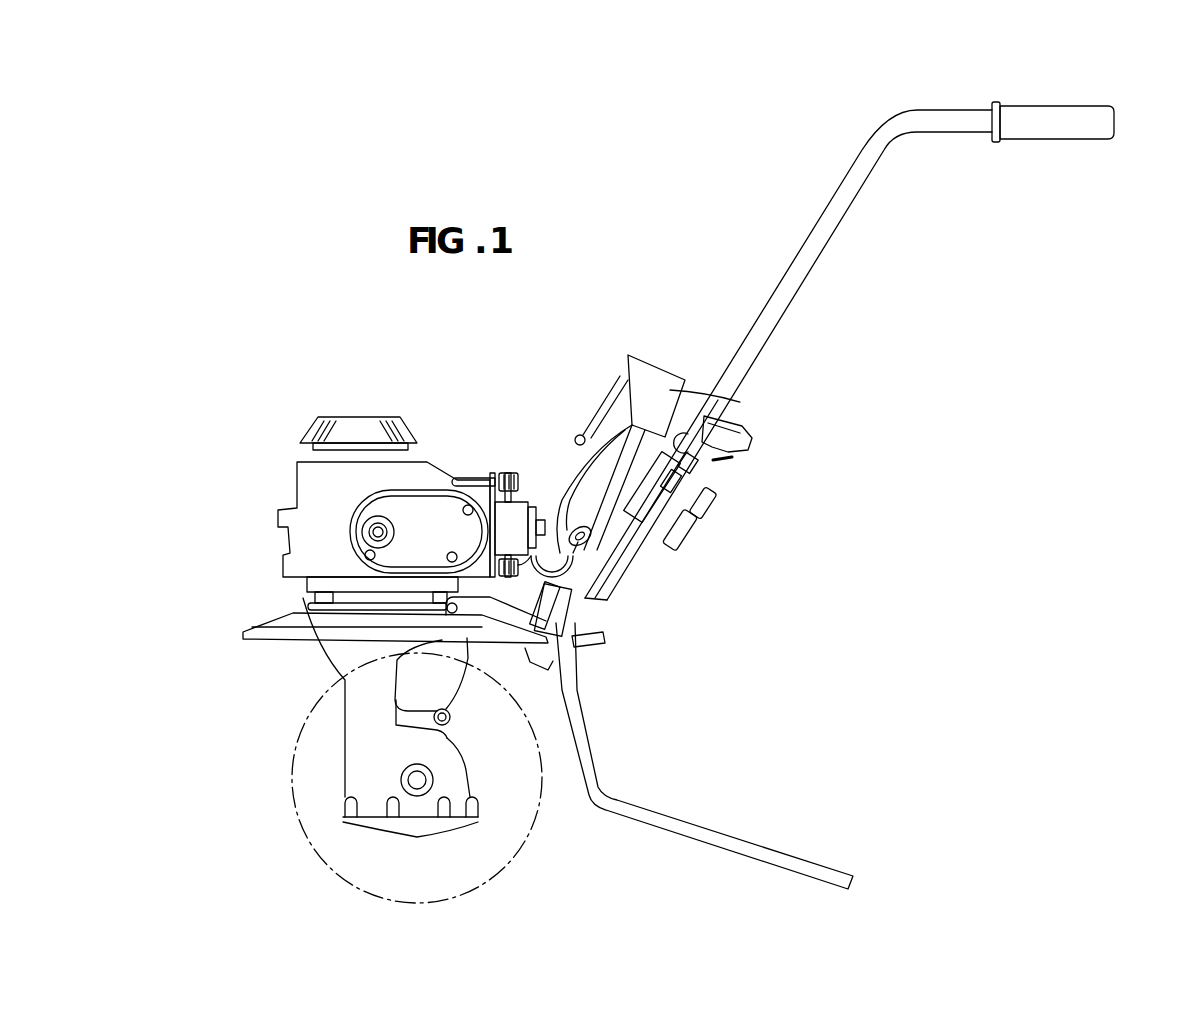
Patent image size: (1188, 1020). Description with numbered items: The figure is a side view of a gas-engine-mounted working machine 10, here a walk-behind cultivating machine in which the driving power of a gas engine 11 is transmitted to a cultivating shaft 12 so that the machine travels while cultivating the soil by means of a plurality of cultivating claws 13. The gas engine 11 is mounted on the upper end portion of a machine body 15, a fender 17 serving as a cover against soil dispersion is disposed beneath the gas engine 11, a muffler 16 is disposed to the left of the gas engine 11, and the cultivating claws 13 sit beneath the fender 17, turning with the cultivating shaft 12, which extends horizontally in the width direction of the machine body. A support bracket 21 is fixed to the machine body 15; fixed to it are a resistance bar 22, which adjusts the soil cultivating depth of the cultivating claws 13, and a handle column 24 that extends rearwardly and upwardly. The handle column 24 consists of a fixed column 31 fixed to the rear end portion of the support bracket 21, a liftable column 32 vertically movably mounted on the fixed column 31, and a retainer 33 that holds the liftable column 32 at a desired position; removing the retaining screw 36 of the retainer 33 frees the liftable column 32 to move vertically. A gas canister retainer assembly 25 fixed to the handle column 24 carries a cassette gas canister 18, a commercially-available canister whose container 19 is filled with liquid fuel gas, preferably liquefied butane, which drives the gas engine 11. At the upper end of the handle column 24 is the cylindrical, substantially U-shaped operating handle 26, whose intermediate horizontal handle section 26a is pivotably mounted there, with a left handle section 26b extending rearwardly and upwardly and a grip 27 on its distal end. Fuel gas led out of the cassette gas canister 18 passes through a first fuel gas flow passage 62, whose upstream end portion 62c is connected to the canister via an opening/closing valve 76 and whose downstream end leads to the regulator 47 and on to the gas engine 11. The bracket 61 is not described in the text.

The gas-engine-mounted working machine 10 is at (290, 357).
The gas engine 11 is at (303, 492).
The cultivating shaft 12 is at (410, 780).
The cultivating claws 13 is at (292, 752).
The machine body 15 is at (305, 612).
The muffler 16 is at (393, 502).
The fender 17 is at (250, 638).
The cassette gas canister 18 is at (645, 373).
The container 19 is at (670, 393).
The support bracket 21 is at (450, 716).
The resistance bar 22 is at (755, 847).
The handle column 24 is at (826, 540).
The gas canister retainer assembly 25 is at (608, 438).
The operating handle 26 is at (843, 180).
The intermediate horizontal handle section 26a is at (683, 438).
The left handle section 26b is at (813, 260).
The left grip 27 is at (1045, 112).
The fixed column 31 is at (622, 560).
The liftable column 32 is at (675, 478).
The retainer 33 is at (697, 522).
The retaining screw 36 is at (682, 538).
The regulator 47 is at (512, 510).
The engine bracket 61 is at (485, 490).
The first fuel gas flow passage 62 is at (575, 657).
The upstream end portion 62c is at (580, 580).
The opening/closing valve 76 is at (580, 520).